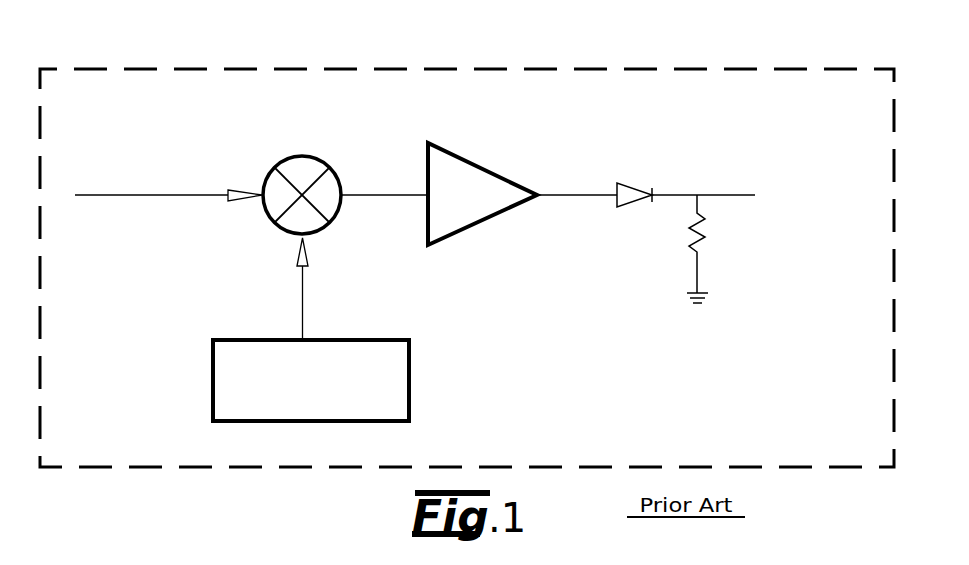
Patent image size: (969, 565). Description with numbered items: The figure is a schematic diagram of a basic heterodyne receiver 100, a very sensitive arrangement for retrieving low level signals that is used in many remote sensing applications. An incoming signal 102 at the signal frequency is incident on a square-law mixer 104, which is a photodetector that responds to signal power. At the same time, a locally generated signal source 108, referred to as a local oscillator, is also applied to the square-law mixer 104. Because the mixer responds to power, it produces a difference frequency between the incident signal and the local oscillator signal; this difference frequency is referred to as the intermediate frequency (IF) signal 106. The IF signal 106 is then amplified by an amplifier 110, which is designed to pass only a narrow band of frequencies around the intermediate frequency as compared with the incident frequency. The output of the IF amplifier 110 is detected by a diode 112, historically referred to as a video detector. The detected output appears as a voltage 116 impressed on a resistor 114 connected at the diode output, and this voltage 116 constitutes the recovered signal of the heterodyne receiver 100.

The heterodyne receiver 100 is at (250, 68).
The signal 102 is at (195, 195).
The square-law mixer 104 is at (316, 157).
The intermediate frequency (IF) signal 106 is at (388, 194).
The local oscillator 108 is at (302, 307).
The IF amplifier 110 is at (486, 168).
The diode 112 is at (640, 182).
The resistor 114 is at (692, 243).
The voltage 116 is at (727, 193).